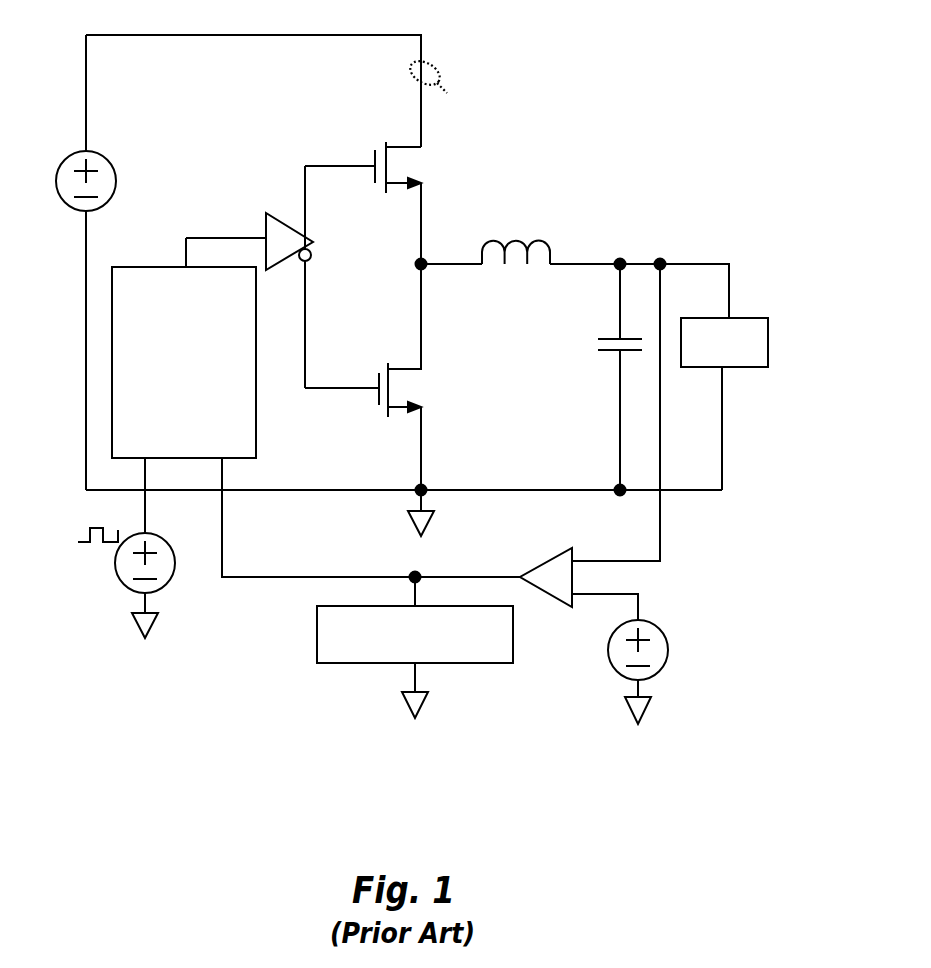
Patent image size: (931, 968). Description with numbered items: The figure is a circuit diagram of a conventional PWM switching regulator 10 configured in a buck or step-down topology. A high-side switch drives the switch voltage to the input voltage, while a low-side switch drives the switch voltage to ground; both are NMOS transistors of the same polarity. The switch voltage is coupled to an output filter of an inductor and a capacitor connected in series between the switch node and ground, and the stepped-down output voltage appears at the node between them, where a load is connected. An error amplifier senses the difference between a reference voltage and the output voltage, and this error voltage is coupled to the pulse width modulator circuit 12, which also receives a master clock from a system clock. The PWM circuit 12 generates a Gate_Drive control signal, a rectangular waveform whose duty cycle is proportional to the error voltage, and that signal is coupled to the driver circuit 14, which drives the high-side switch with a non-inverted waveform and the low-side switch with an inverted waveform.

The PWM switching regulator 10 is at (594, 70).
The driver circuit 14 is at (305, 222).
The pulse width modulator (PWM) circuit 12 is at (256, 304).